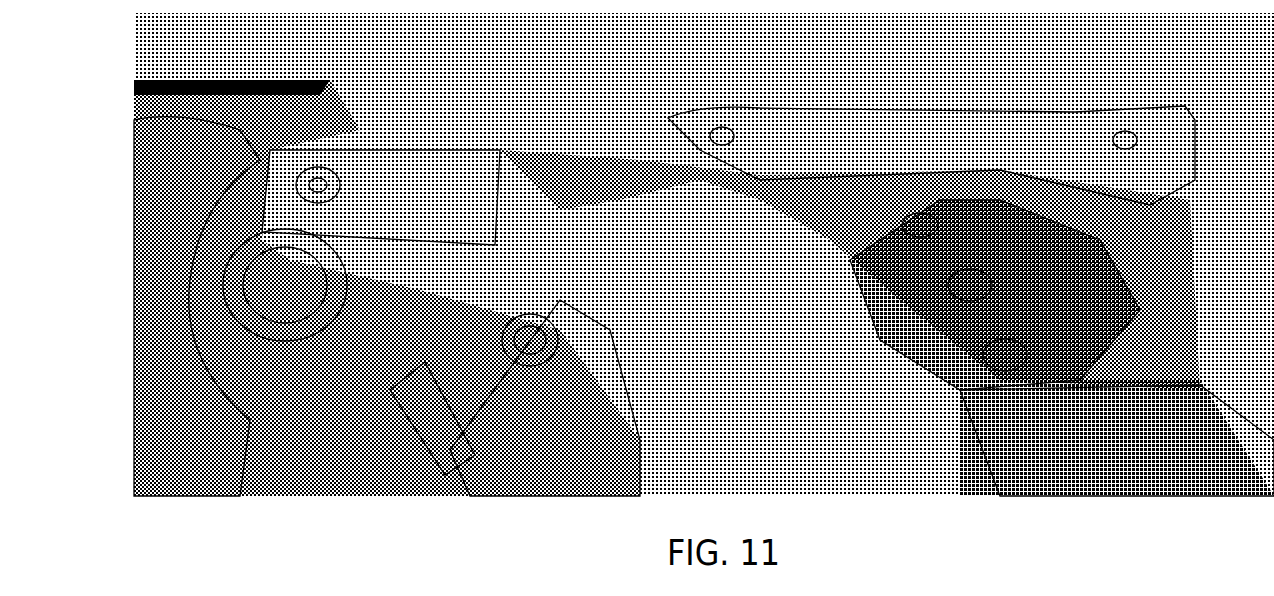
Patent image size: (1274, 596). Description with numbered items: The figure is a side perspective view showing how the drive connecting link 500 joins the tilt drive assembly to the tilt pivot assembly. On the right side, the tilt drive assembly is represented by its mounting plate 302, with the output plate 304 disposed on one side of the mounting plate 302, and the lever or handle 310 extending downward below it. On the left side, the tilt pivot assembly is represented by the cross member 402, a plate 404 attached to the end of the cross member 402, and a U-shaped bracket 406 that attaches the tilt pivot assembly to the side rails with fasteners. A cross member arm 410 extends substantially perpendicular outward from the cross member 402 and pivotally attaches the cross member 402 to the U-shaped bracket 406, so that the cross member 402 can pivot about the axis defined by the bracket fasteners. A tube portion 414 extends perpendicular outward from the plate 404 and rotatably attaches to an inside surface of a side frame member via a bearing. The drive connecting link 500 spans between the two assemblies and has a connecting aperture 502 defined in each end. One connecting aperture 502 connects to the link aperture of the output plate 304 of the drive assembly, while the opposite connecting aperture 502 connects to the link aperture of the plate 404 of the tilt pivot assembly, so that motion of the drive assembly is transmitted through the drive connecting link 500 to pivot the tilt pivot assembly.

The mounting plate 302 is at (747, 103).
The output plate 304 is at (918, 385).
The lever or handle 310 is at (1097, 480).
The cross member 402 is at (415, 398).
The plate 404 is at (200, 373).
The U-shaped bracket 406 is at (555, 480).
The cross member arm 410 is at (492, 370).
The tube portion 414 is at (220, 270).
The drive connecting link 500 is at (452, 157).
The connecting aperture 502 is at (325, 162).